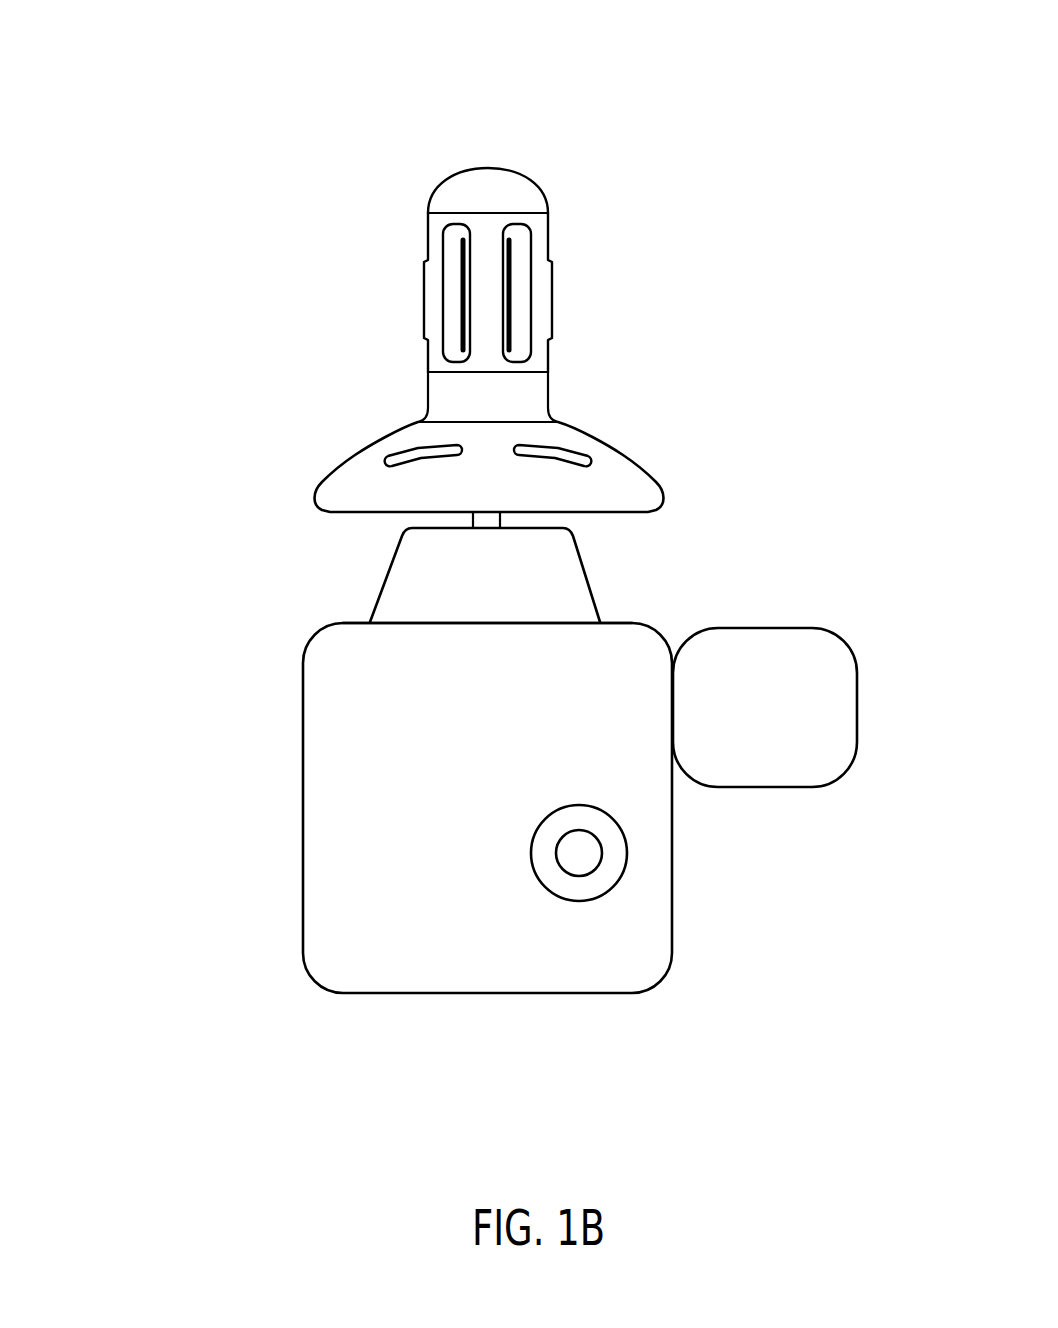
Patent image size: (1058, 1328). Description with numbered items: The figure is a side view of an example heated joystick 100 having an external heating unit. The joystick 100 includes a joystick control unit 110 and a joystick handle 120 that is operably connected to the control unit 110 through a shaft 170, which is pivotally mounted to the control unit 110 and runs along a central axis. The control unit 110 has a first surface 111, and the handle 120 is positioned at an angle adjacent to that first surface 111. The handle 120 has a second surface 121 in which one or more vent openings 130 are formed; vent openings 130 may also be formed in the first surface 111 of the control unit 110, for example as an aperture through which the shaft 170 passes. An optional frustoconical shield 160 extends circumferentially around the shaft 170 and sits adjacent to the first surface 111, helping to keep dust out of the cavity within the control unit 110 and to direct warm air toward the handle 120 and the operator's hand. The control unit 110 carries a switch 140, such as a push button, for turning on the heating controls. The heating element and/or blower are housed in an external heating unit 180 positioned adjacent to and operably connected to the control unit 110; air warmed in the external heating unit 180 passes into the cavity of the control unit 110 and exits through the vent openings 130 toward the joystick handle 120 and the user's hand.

The joystick 100 is at (100, 78).
The joystick control unit 110 is at (357, 730).
The first surface 111 is at (620, 620).
The joystick handle 120 is at (540, 272).
The second surface 121 is at (575, 430).
The vent openings 130 is at (450, 296).
The switch 140 is at (573, 856).
The shield 160 is at (545, 580).
The shaft 170 is at (470, 513).
The external heating unit 180 is at (767, 653).